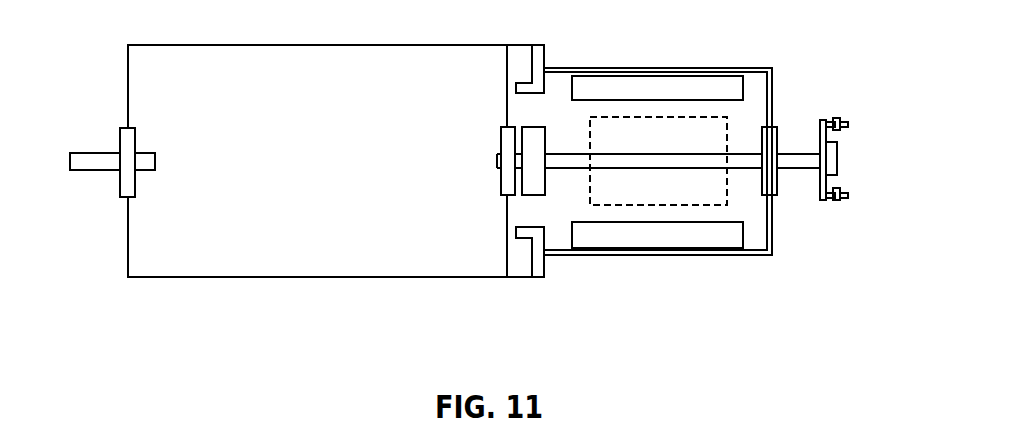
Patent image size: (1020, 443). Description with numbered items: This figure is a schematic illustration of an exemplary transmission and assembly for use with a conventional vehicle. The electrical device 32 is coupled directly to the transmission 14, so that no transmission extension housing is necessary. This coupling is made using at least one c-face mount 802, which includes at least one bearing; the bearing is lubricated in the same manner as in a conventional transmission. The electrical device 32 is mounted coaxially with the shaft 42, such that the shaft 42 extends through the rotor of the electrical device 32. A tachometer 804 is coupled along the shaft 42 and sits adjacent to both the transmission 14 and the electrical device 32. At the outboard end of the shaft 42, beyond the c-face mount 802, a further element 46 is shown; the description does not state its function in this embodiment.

The transmission 14 is at (267, 45).
The shaft 42 is at (796, 149).
The c-face mount 802 is at (646, 63).
The tachometer 804 is at (543, 120).
The electrical device 32 is at (683, 199).
The encoder bracket 46 is at (828, 184).